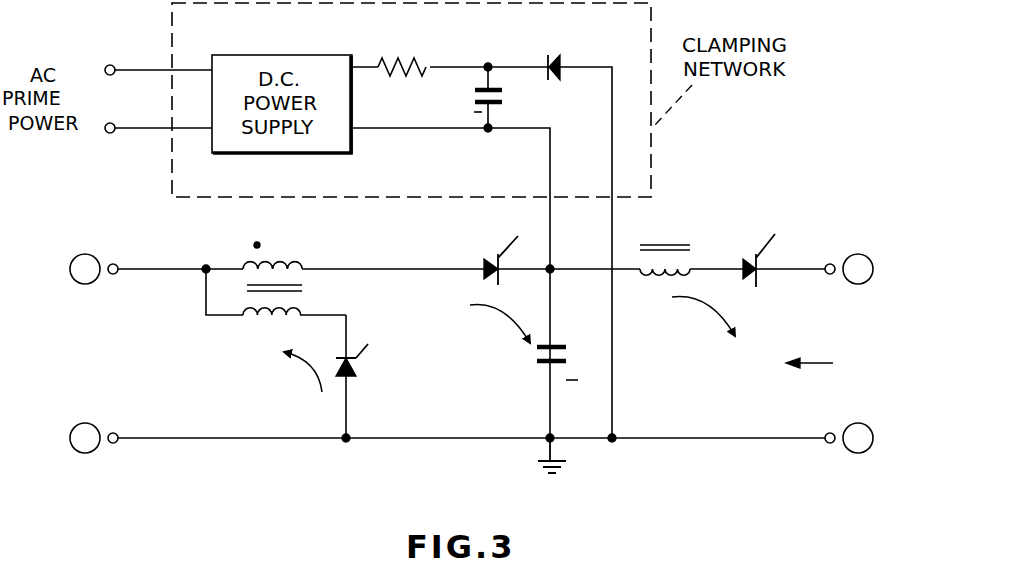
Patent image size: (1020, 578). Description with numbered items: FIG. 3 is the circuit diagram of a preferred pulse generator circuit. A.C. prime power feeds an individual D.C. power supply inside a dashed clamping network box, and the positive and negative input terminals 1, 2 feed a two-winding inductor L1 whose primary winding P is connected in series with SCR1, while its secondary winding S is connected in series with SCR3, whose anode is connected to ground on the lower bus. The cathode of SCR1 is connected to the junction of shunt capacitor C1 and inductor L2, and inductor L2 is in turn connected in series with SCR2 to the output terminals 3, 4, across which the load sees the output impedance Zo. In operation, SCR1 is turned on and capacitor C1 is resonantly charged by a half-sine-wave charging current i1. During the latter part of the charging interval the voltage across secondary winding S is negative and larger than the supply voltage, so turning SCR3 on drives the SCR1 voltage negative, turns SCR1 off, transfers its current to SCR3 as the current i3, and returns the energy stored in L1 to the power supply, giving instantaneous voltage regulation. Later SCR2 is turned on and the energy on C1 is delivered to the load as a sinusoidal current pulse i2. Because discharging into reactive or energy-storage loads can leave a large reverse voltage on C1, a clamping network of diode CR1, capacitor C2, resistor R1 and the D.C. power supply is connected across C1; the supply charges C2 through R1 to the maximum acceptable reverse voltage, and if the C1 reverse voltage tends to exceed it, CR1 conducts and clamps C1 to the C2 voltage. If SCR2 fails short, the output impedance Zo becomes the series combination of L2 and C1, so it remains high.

The positive input terminal 1 is at (71, 269).
The negative input terminal 2 is at (71, 438).
The positive output terminal 3 is at (870, 269).
The negative output terminal 4 is at (870, 438).
The resistor R1 is at (403, 57).
The capacitor C2 is at (475, 92).
The diode CR1 is at (567, 42).
The two-winding inductor L1 is at (277, 288).
The primary winding P is at (280, 251).
The secondary winding S is at (276, 306).
The element SCR1 is at (497, 250).
The element SCR2 is at (752, 245).
The element SCR3 is at (357, 370).
The shunt capacitor C1 is at (568, 352).
The inductor L2 is at (677, 244).
The charging current i1 is at (500, 323).
The sinusoidal current pulse i2 is at (703, 316).
The third current i3 is at (295, 372).
The output impedance Zo is at (828, 351).